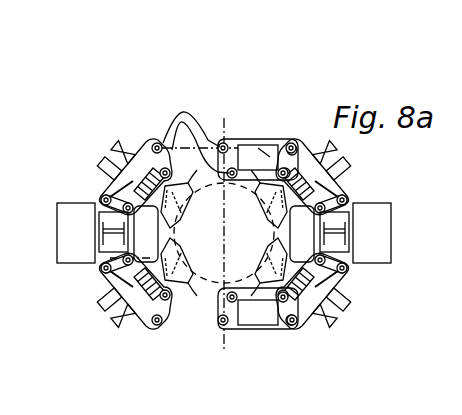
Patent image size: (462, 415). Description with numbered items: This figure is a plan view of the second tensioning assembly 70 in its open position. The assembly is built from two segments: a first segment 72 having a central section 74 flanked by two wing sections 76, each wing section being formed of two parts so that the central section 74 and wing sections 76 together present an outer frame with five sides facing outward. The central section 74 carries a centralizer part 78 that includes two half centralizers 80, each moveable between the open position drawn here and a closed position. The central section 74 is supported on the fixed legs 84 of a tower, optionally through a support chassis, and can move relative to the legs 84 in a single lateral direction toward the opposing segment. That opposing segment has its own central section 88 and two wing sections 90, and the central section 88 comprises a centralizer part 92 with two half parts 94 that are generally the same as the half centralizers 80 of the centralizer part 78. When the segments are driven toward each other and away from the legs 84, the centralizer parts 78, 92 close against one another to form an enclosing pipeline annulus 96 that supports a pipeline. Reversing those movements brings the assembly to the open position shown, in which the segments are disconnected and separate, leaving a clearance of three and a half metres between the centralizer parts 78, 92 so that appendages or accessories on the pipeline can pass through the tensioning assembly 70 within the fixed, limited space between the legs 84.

The second tensioning assembly 70 is at (78, 335).
The first segment 72 is at (366, 290).
The central section 74 is at (352, 204).
The wing sections 76 is at (295, 327).
The centralizer part 78 is at (257, 255).
The half centralizers 80 is at (268, 240).
The fixed legs 84 is at (392, 222).
The central section 88 is at (82, 268).
The wing sections 90 is at (138, 147).
The centralizer part 92 is at (186, 232).
The half parts 94 is at (191, 192).
The pipeline annulus 96 is at (183, 113).